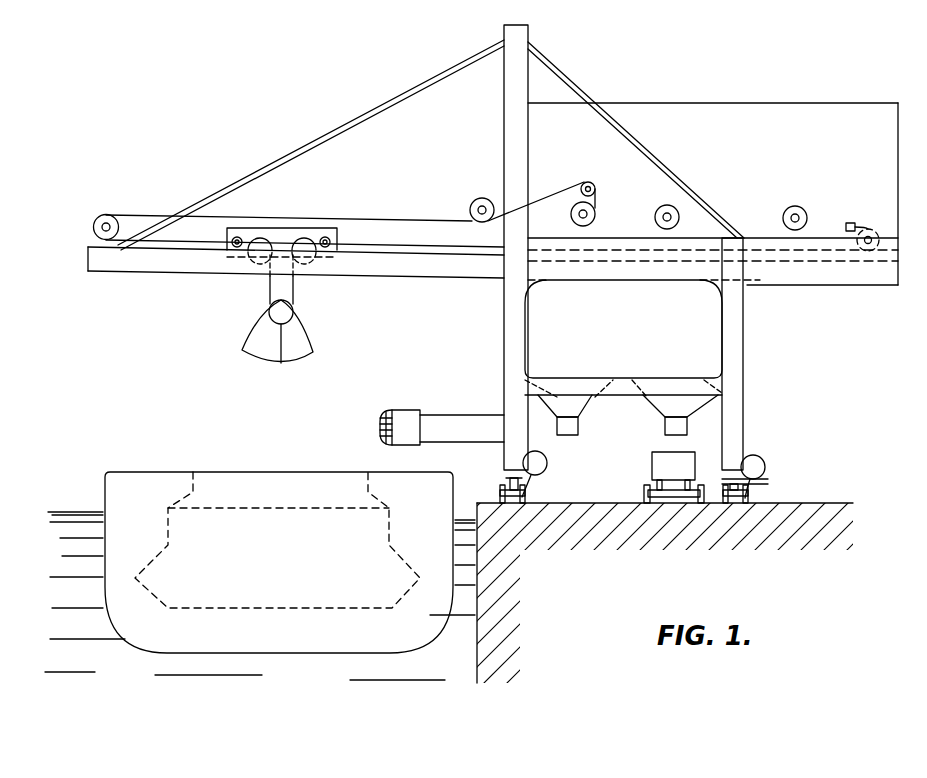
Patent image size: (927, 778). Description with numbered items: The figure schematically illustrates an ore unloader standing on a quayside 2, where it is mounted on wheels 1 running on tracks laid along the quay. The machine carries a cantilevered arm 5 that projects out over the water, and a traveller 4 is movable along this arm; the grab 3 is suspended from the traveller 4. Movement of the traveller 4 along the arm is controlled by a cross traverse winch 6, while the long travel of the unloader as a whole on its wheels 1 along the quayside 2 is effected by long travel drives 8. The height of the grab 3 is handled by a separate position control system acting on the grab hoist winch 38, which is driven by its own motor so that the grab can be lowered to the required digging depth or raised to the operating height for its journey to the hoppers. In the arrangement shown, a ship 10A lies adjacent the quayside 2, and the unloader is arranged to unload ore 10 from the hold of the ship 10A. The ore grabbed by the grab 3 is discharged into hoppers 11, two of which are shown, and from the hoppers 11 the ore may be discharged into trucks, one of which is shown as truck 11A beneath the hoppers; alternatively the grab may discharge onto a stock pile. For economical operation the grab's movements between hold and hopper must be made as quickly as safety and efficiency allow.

The wheels 1 is at (500, 490).
The quayside 2 is at (502, 527).
The grab 3 is at (252, 343).
The traveller 4 is at (307, 236).
The cantilevered arm 5 is at (413, 245).
The cross traverse winch 6 is at (784, 216).
The long travel drives 8 is at (547, 466).
The ore 10 is at (251, 512).
The ship 10A is at (145, 484).
The hoppers 11 is at (577, 403).
The truck 11A is at (652, 462).
The grab hoist winch 38 is at (590, 214).